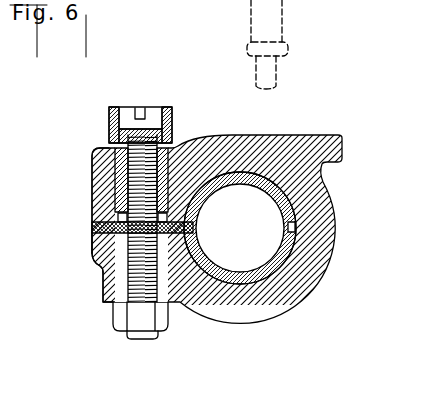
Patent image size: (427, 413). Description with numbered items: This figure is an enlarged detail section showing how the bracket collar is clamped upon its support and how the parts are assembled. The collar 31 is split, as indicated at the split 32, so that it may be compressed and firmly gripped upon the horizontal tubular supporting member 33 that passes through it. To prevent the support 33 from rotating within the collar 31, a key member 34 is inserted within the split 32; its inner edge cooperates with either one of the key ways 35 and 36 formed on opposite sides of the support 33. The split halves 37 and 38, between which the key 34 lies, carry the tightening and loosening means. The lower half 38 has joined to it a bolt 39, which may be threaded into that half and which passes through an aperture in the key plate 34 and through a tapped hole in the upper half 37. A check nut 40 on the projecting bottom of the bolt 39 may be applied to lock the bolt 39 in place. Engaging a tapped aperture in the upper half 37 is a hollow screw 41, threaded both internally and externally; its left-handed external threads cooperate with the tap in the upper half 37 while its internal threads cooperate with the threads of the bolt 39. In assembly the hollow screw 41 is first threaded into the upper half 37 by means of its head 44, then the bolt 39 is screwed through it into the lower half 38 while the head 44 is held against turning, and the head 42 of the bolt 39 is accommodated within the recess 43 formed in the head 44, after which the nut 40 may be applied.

The collar 31 is at (285, 135).
The split 32 is at (93, 229).
The horizontal tubular supporting member 33 is at (283, 256).
The key member 34 is at (92, 236).
The key way 35 is at (190, 233).
The key way 36 is at (289, 230).
The upper half 37 is at (92, 172).
The lower half 38 is at (101, 262).
The bolt 39 is at (103, 291).
The check nut 40 is at (168, 322).
The hollow screw 41 is at (108, 155).
The head 42 is at (155, 114).
The recess 43 is at (134, 108).
The head 44 is at (172, 118).